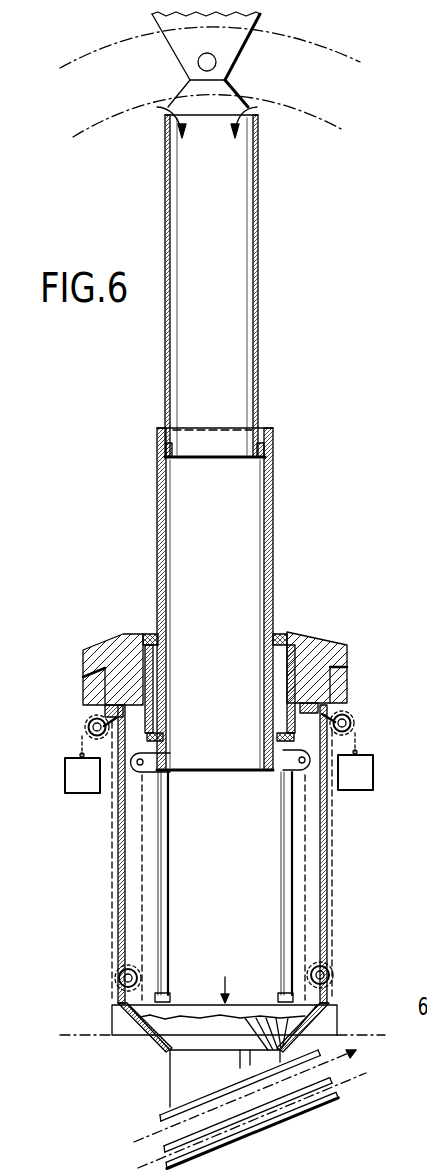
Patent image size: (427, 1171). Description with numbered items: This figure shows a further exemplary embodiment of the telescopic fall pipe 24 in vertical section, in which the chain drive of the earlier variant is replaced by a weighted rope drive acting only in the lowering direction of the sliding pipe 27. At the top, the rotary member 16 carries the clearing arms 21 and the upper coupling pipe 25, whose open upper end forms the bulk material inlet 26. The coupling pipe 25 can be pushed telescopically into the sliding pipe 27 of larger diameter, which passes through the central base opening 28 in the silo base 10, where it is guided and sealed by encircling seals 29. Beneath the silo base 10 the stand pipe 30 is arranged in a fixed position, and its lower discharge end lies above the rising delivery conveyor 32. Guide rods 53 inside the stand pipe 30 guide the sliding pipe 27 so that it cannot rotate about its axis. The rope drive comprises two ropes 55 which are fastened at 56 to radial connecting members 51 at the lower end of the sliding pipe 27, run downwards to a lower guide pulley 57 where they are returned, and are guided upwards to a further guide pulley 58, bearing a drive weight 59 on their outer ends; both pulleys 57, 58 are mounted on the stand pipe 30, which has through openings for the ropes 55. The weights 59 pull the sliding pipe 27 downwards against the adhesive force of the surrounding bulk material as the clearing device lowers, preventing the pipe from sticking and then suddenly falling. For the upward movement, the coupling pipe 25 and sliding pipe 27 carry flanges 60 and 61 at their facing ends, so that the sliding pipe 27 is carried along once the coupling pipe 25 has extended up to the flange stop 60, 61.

The rotary member 16 is at (250, 21).
The clearing arms 21 is at (336, 64).
The bulk material inlet 26 is at (208, 115).
The coupling pipe 25 is at (242, 300).
The flange 60 is at (273, 428).
The telescopic fall pipe 24 is at (150, 441).
The flange 61 is at (268, 450).
The sliding pipe 27 is at (255, 512).
The encircling seals 29 is at (278, 633).
The base opening 28 is at (155, 667).
The silo base 10 is at (328, 647).
The guide pulley 58 is at (86, 720).
The rope fastening point 56 is at (165, 757).
The connecting members 51 is at (145, 772).
The drive weight 59 is at (76, 791).
The stand pipe 30 is at (327, 835).
The guide rods 53 is at (160, 852).
The ropes 55 is at (145, 905).
The guide pulley 57 is at (115, 980).
The delivery conveyor 32 is at (273, 1110).